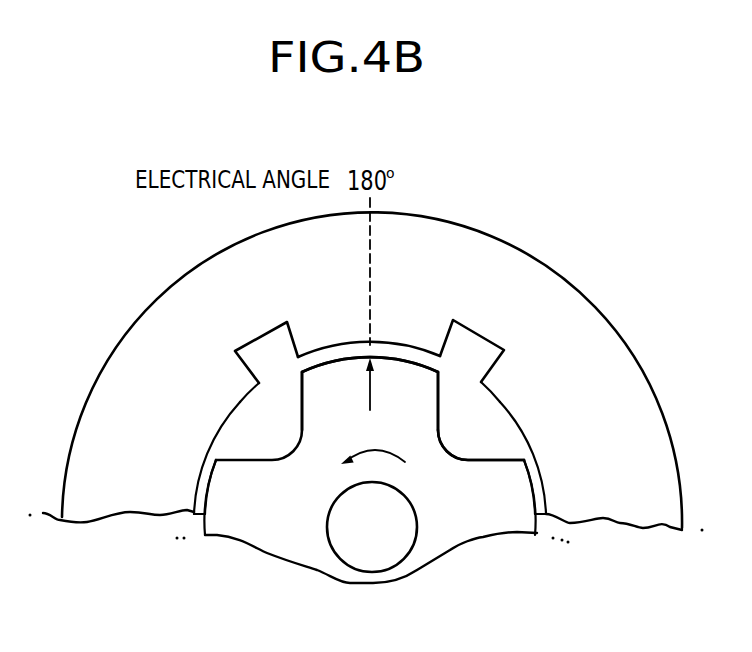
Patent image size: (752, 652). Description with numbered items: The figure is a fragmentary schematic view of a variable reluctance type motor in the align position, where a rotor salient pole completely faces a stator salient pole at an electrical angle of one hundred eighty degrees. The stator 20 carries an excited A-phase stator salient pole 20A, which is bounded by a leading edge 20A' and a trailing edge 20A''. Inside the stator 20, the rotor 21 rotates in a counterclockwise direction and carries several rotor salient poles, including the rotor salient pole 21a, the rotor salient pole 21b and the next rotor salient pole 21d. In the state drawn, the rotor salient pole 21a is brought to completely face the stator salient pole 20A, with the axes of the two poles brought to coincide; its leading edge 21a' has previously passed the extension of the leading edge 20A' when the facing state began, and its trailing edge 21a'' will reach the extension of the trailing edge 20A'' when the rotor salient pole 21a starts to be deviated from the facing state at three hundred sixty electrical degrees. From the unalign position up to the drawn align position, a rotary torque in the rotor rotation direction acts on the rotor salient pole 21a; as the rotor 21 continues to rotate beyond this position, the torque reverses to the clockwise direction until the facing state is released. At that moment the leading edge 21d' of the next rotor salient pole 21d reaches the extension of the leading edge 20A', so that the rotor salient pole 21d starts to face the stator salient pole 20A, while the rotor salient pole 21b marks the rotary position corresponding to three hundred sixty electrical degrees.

The stator 20 is at (568, 274).
The stator salient pole 20A is at (398, 260).
The leading edge of the stator salient pole 20A' is at (475, 324).
The trailing edge of the stator salient pole 20A'' is at (265, 325).
The rotor 21 is at (250, 448).
The rotor salient pole 21a is at (370, 317).
The leading edge of the rotor salient pole 21a' is at (237, 379).
The trailing edge of the rotor salient pole 21a'' is at (503, 379).
The rotor salient pole 21b is at (218, 506).
The rotor salient pole 21d is at (562, 458).
The leading edge of the next rotor salient pole 21d' is at (512, 421).